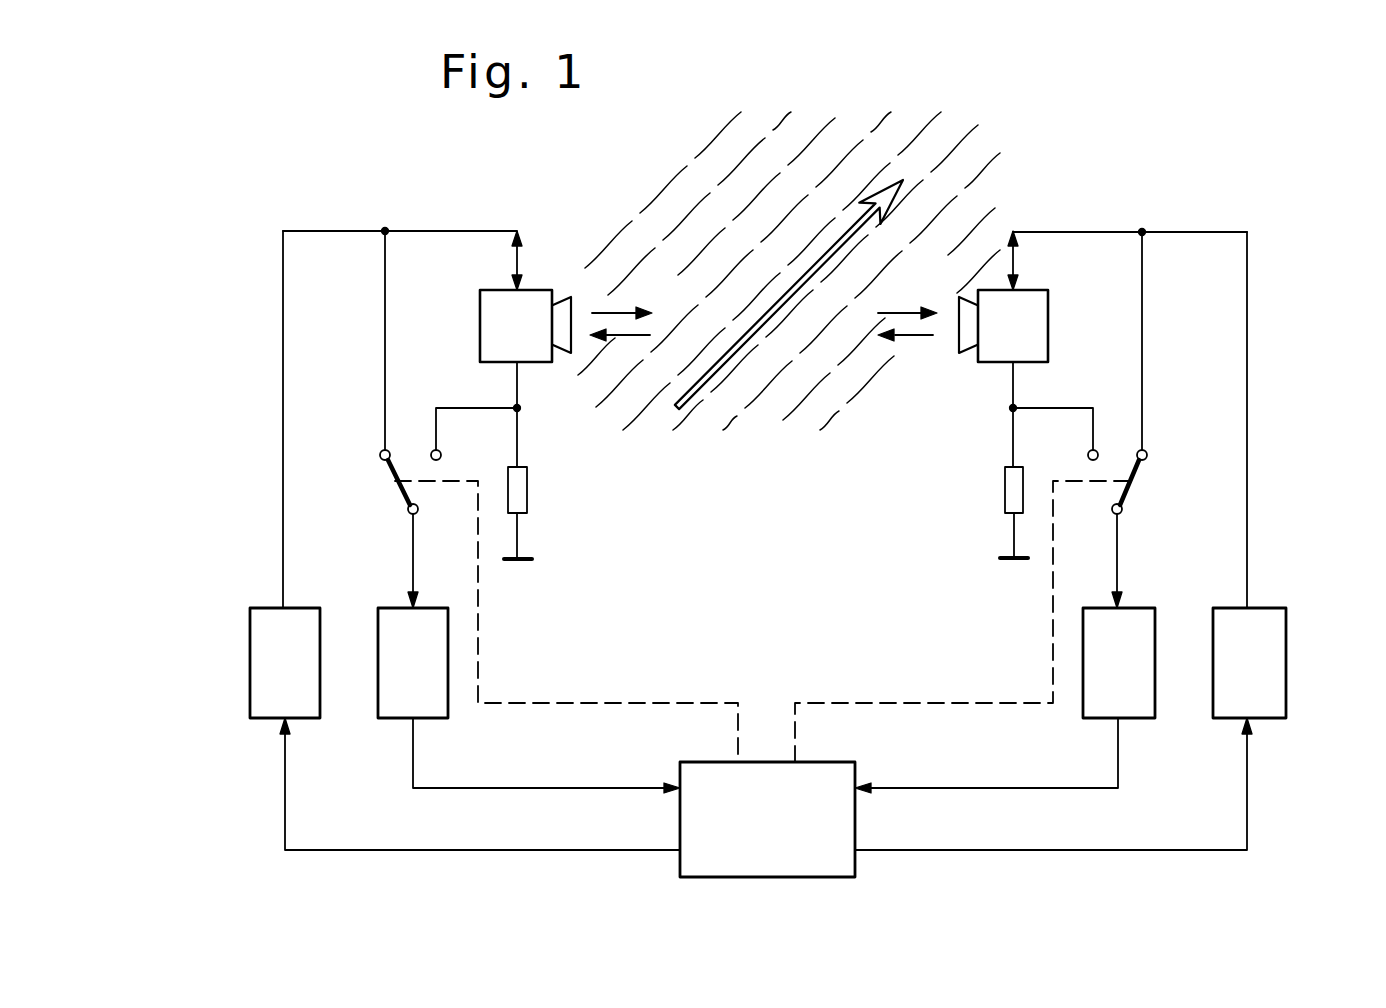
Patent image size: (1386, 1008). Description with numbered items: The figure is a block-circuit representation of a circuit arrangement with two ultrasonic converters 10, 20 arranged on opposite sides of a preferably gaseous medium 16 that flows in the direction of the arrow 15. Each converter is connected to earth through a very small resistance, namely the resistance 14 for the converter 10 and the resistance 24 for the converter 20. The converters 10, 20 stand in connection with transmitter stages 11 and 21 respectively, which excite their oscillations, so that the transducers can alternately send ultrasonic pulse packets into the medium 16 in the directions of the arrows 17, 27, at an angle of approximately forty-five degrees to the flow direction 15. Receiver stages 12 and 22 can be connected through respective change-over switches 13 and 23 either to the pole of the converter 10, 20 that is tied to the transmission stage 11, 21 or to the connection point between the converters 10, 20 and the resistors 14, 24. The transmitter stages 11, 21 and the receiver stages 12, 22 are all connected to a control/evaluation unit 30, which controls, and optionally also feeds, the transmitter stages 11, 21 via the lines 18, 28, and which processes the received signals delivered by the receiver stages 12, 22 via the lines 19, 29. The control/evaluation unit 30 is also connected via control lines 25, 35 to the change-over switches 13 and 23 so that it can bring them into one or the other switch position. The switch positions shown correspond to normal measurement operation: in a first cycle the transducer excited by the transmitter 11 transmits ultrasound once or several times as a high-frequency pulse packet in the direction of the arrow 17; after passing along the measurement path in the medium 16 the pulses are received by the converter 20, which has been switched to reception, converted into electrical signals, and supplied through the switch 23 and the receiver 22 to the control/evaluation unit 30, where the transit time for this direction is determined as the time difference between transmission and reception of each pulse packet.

The ultrasonic converter 10 is at (479, 314).
The transmitter stage 11 is at (250, 632).
The receiver stage 12 is at (388, 607).
The change-over switch 13 is at (388, 473).
The resistance 14 is at (528, 487).
The arrow 15 is at (746, 342).
The medium 16 is at (774, 250).
The arrow 17 is at (617, 312).
The line 18 is at (490, 850).
The line 19 is at (562, 788).
The ultrasonic converter 20 is at (1049, 314).
The transmitter stage 21 is at (1286, 618).
The receiver stage 22 is at (1134, 607).
The change-over switch 23 is at (1140, 474).
The resistance 24 is at (1003, 487).
The control line 25 is at (620, 702).
The arrow 27 is at (630, 337).
The line 28 is at (1040, 850).
The line 29 is at (975, 788).
The control/evaluation unit 30 is at (790, 878).
The control line 35 is at (902, 702).